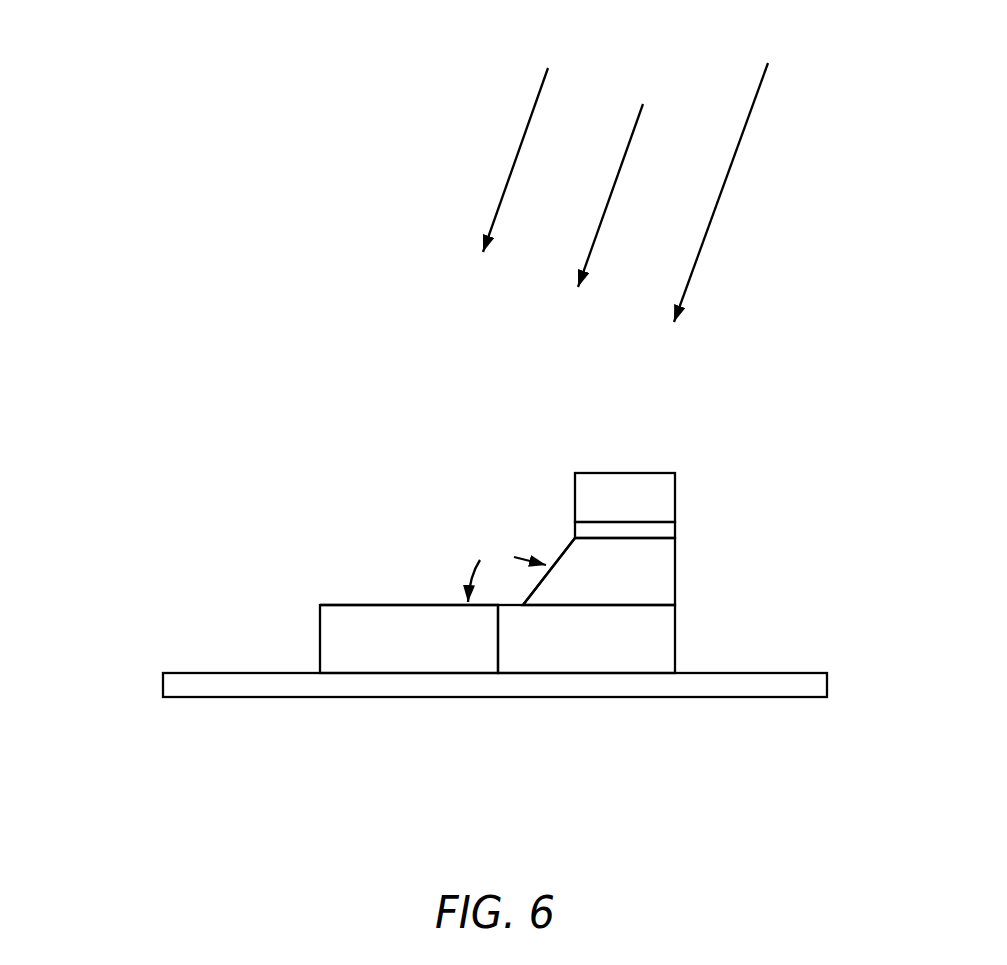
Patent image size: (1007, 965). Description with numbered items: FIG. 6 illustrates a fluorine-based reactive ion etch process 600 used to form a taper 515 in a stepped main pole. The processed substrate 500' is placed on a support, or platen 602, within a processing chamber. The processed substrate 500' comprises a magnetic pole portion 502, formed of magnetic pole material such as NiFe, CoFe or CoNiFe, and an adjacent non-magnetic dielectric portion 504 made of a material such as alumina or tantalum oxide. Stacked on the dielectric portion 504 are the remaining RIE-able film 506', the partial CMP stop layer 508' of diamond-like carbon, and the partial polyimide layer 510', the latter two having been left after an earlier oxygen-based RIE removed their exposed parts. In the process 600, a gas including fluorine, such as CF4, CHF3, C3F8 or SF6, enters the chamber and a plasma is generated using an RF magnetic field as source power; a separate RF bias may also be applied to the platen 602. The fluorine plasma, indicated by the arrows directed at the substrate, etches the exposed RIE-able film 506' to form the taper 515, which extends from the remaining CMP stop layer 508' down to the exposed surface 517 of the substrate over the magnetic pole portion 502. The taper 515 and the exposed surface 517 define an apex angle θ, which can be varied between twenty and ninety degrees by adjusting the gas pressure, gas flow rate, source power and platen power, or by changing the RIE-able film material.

The fluorine-based reactive ion etch process 600 is at (227, 216).
The processed substrate 500' is at (449, 535).
The support (platen) 602 is at (202, 672).
The magnetic pole portion 502 is at (409, 639).
The non-magnetic dielectric portion 504 is at (586, 639).
The RIE-able film 506' is at (663, 573).
The partial CMP stop layer 508' is at (689, 543).
The partial polyimide layer 510' is at (689, 489).
The taper 515 is at (567, 547).
The exposed surface of the substrate 517 is at (398, 602).